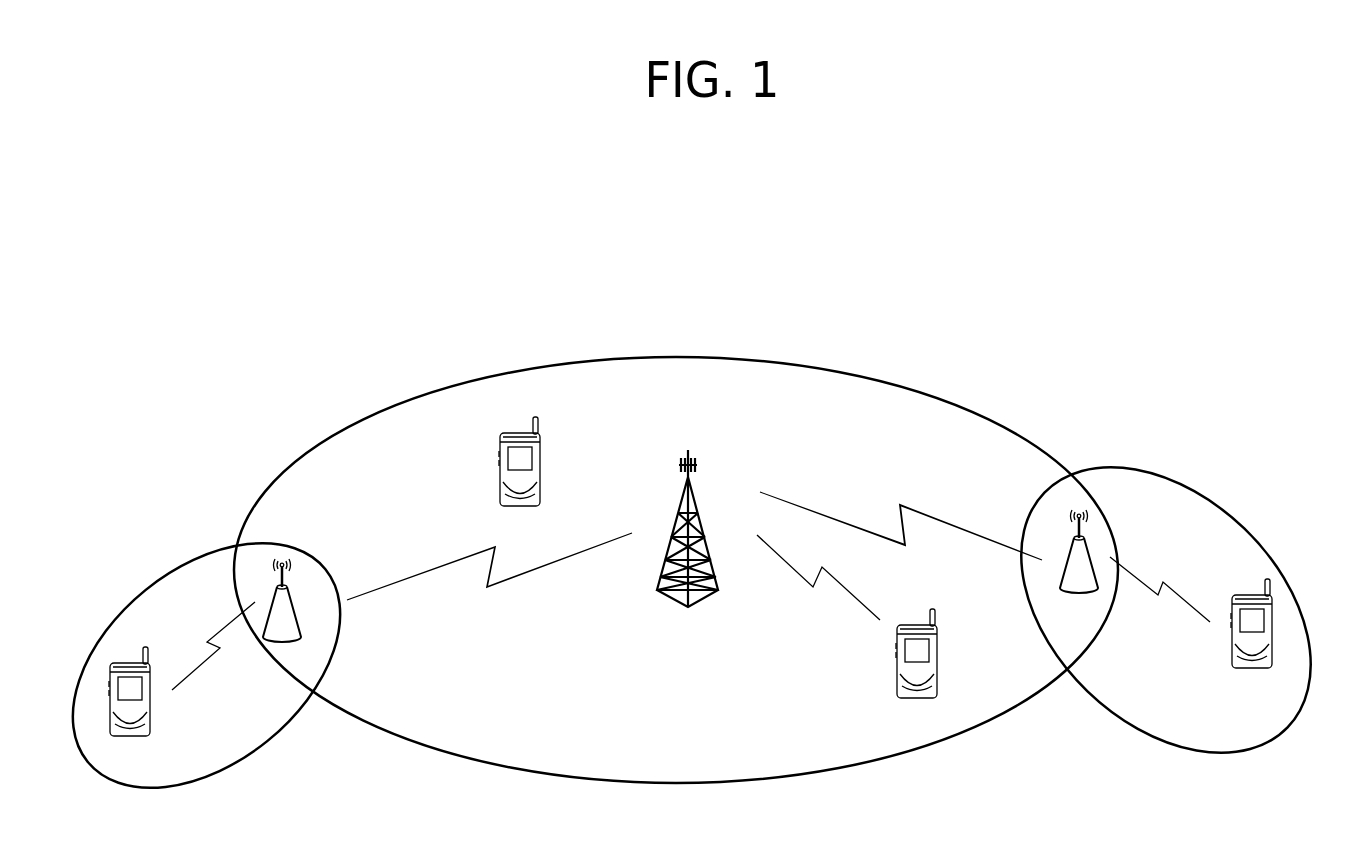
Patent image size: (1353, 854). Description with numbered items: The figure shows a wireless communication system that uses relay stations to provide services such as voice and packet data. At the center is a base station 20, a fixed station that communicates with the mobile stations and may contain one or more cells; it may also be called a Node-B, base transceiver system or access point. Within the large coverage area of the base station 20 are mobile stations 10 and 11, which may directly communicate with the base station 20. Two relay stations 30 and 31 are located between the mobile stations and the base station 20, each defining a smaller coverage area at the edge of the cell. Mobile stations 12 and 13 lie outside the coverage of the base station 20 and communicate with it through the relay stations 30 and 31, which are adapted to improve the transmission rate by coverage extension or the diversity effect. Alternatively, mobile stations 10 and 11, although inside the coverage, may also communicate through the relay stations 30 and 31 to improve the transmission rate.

The mobile station 10 is at (498, 470).
The mobile station 11 is at (938, 650).
The mobile station 12 is at (150, 707).
The mobile station 13 is at (1231, 638).
The base station 20 is at (697, 493).
The relay station 30 is at (288, 599).
The relay station 31 is at (1088, 543).